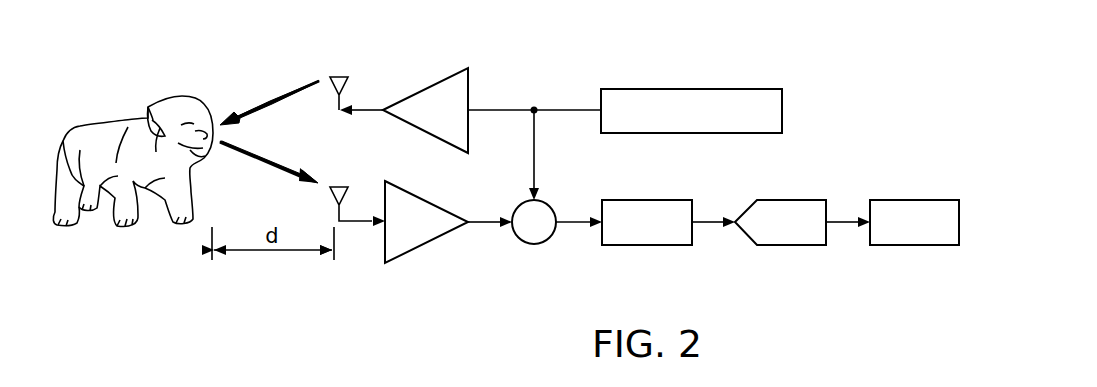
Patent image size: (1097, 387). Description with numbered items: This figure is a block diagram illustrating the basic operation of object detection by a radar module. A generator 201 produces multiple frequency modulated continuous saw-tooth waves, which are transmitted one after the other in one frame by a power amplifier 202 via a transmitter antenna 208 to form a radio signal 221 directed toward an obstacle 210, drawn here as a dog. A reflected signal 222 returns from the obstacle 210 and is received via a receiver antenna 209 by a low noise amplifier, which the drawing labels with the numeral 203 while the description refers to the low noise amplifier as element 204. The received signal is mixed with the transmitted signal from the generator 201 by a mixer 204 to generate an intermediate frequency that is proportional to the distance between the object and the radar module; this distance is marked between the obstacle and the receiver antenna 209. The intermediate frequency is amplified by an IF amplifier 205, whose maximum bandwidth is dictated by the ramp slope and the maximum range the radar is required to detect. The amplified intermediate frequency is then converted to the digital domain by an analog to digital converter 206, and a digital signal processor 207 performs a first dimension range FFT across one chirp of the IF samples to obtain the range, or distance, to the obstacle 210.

The generator 201 is at (690, 88).
The power amplifier 202 is at (427, 88).
The low noise amplifier (LNA) 203 is at (428, 245).
The mixer 204 is at (540, 244).
The IF amplifier 205 is at (647, 246).
The analog to digital converter 206 is at (790, 247).
The digital signal processor 207 is at (917, 247).
The transmitter antenna 208 is at (337, 75).
The receiver antenna 209 is at (344, 186).
The obstacle 210 is at (108, 126).
The radio signal 221 is at (258, 101).
The reflected signal 222 is at (262, 162).